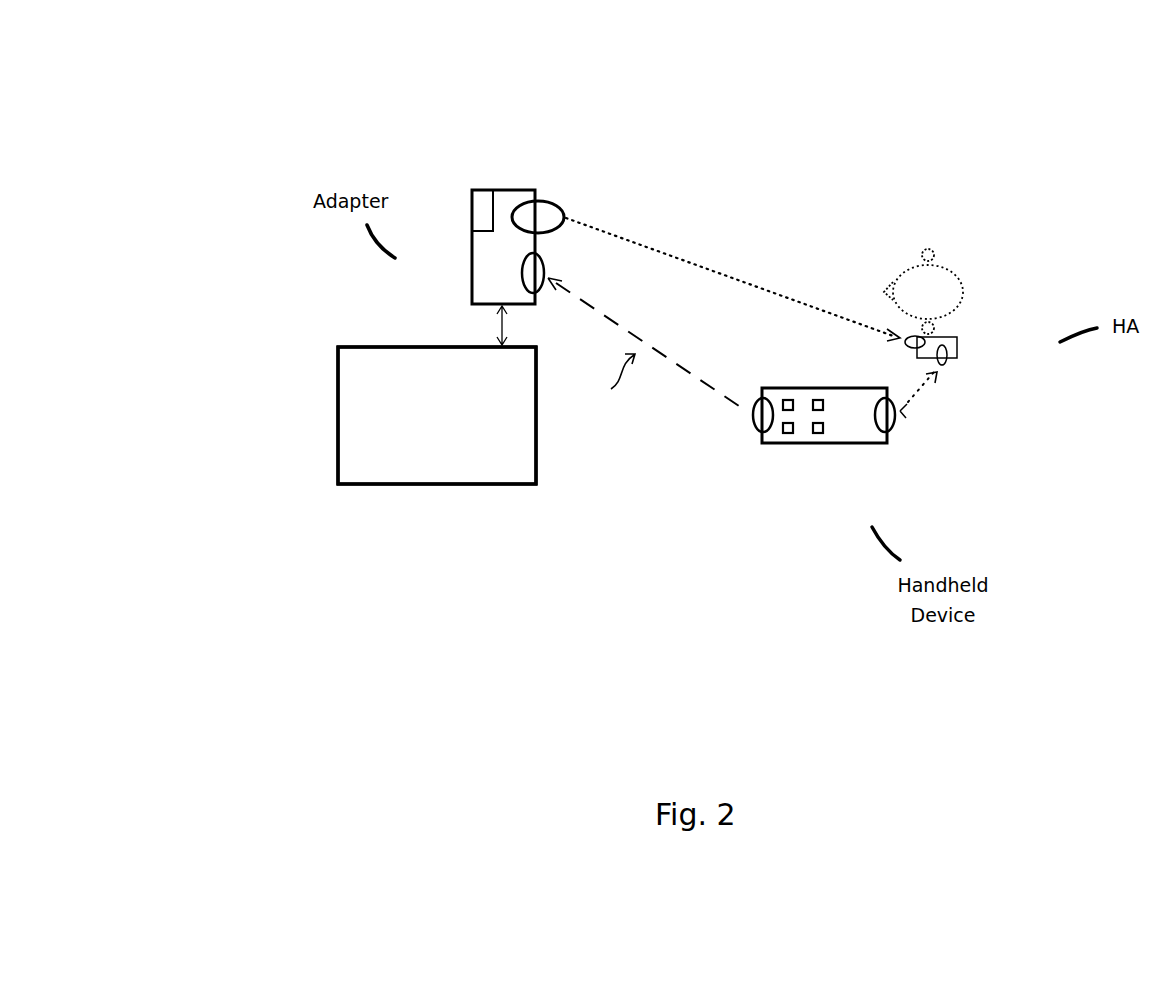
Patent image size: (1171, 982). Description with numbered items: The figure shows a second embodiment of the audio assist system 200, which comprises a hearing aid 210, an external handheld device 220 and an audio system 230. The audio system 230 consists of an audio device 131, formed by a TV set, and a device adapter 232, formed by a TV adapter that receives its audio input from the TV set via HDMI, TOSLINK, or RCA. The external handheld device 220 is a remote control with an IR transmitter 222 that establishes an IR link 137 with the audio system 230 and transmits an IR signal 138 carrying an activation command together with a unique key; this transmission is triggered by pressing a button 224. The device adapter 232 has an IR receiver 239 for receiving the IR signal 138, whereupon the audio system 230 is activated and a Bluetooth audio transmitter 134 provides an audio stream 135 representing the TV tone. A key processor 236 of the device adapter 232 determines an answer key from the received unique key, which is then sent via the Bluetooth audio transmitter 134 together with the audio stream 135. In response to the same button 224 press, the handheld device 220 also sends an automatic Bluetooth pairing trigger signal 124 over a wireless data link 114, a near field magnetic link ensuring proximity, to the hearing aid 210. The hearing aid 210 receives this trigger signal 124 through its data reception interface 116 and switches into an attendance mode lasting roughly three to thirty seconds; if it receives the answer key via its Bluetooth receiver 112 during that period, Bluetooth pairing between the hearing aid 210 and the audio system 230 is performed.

The audio assist system 200 is at (310, 97).
The audio system 230 is at (364, 326).
The audio device 131 is at (357, 415).
The device adapter 232 is at (490, 261).
The key processor 236 is at (480, 206).
The Bluetooth audio transmitter 134 is at (543, 213).
The IR receiver 239 is at (538, 299).
The audio stream 135 is at (600, 228).
The IR link 137 is at (610, 385).
The IR signal 138 is at (687, 372).
The external handheld device 220 is at (852, 434).
The IR transmitter 222 is at (760, 430).
The button 224 is at (788, 433).
The wireless data link 114 is at (908, 414).
The automatic Bluetooth pairing trigger signal 124 is at (920, 391).
The hearing aid 210 is at (953, 345).
The data reception interface 116 is at (947, 362).
The Bluetooth receiver 112 is at (915, 338).